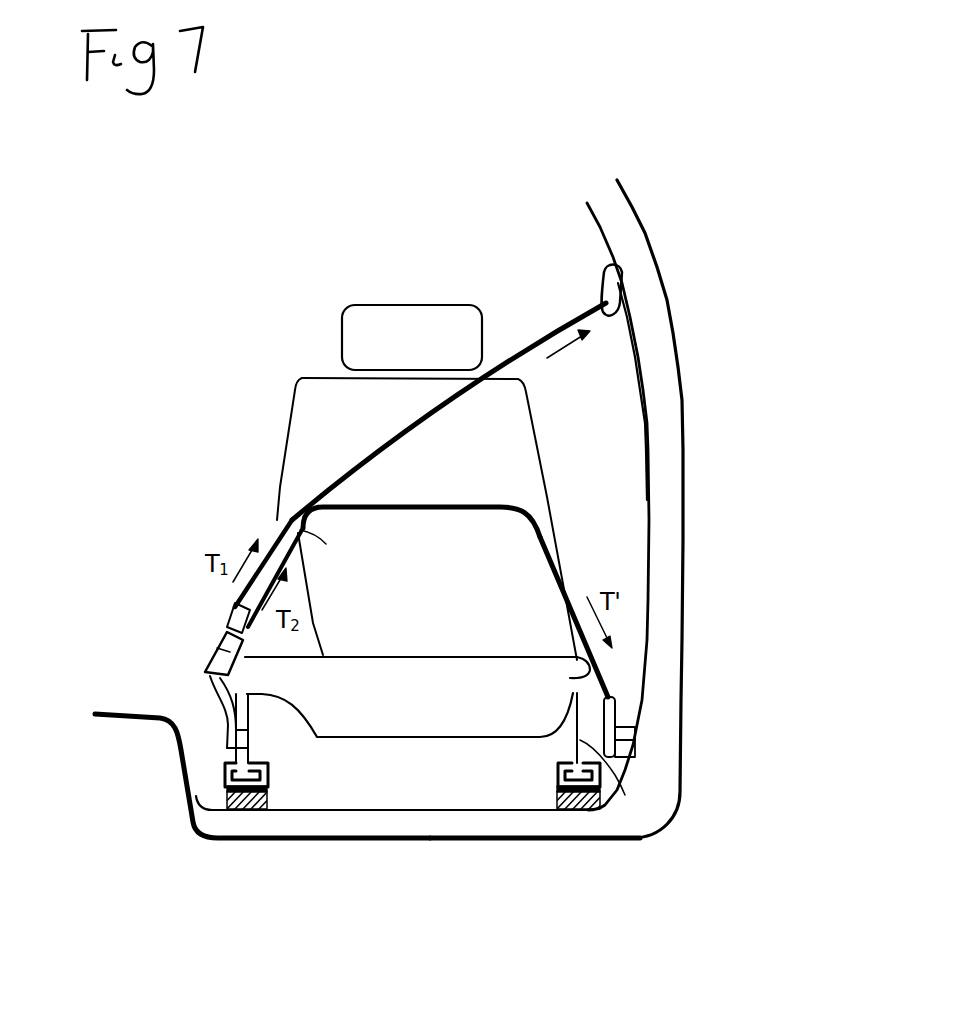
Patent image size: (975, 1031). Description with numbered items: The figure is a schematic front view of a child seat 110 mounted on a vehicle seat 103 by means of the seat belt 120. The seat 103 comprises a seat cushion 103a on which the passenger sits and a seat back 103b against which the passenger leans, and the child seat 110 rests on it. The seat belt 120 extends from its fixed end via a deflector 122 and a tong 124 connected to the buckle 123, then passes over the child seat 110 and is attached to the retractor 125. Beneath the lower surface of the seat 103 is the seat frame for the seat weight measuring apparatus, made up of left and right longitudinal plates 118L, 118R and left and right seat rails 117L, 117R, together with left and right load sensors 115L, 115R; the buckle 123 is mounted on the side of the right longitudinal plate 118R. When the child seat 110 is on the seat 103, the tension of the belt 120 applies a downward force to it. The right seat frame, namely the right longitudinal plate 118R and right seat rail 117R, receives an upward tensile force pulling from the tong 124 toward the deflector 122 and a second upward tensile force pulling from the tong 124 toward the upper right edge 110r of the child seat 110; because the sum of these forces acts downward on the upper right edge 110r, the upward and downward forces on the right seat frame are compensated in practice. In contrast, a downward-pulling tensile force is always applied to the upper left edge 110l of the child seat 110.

The deflector 122 is at (601, 278).
The seat belt 120 is at (547, 333).
The child seat 110 is at (366, 550).
The upper right edge of the child seat 110r is at (310, 505).
The upper left edge of the child seat 110l is at (538, 505).
The seat 103 is at (562, 529).
The seat cushion 103a is at (570, 680).
The seat back 103b is at (540, 517).
The tong 124 is at (228, 618).
The buckle 123 is at (206, 650).
The retractor 125 is at (633, 714).
The right longitudinal plate 118R is at (227, 752).
The left longitudinal plate 118L is at (605, 805).
The right seat rail 117R is at (225, 779).
The left seat rail 117L is at (612, 782).
The right load sensor 115R is at (190, 826).
The left load sensor 115L is at (638, 832).